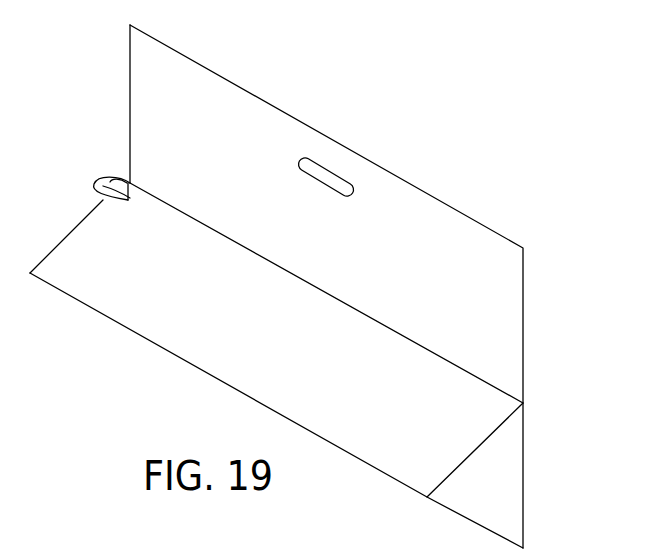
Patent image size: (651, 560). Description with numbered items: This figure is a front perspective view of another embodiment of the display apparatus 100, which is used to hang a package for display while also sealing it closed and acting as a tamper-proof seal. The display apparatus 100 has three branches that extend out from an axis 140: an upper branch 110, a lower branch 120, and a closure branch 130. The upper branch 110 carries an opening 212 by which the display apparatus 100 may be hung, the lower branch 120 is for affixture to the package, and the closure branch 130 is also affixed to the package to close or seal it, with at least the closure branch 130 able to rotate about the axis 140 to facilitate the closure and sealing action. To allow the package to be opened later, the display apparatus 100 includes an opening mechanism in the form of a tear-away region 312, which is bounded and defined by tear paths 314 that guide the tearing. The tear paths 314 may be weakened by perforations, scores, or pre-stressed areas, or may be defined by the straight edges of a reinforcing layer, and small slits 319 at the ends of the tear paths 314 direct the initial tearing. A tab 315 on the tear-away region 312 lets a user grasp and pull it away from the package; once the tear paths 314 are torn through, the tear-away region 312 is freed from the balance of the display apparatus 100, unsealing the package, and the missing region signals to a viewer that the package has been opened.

The display apparatus 100 is at (489, 154).
The upper branch 110 is at (508, 261).
The lower branch 120 is at (513, 532).
The closure branch 130 is at (418, 483).
The axis 140 is at (470, 373).
The opening 212 is at (322, 176).
The tear-away region 312 is at (100, 199).
The tear paths 314 is at (465, 378).
The tab 315 is at (111, 182).
The slits 319 is at (128, 183).